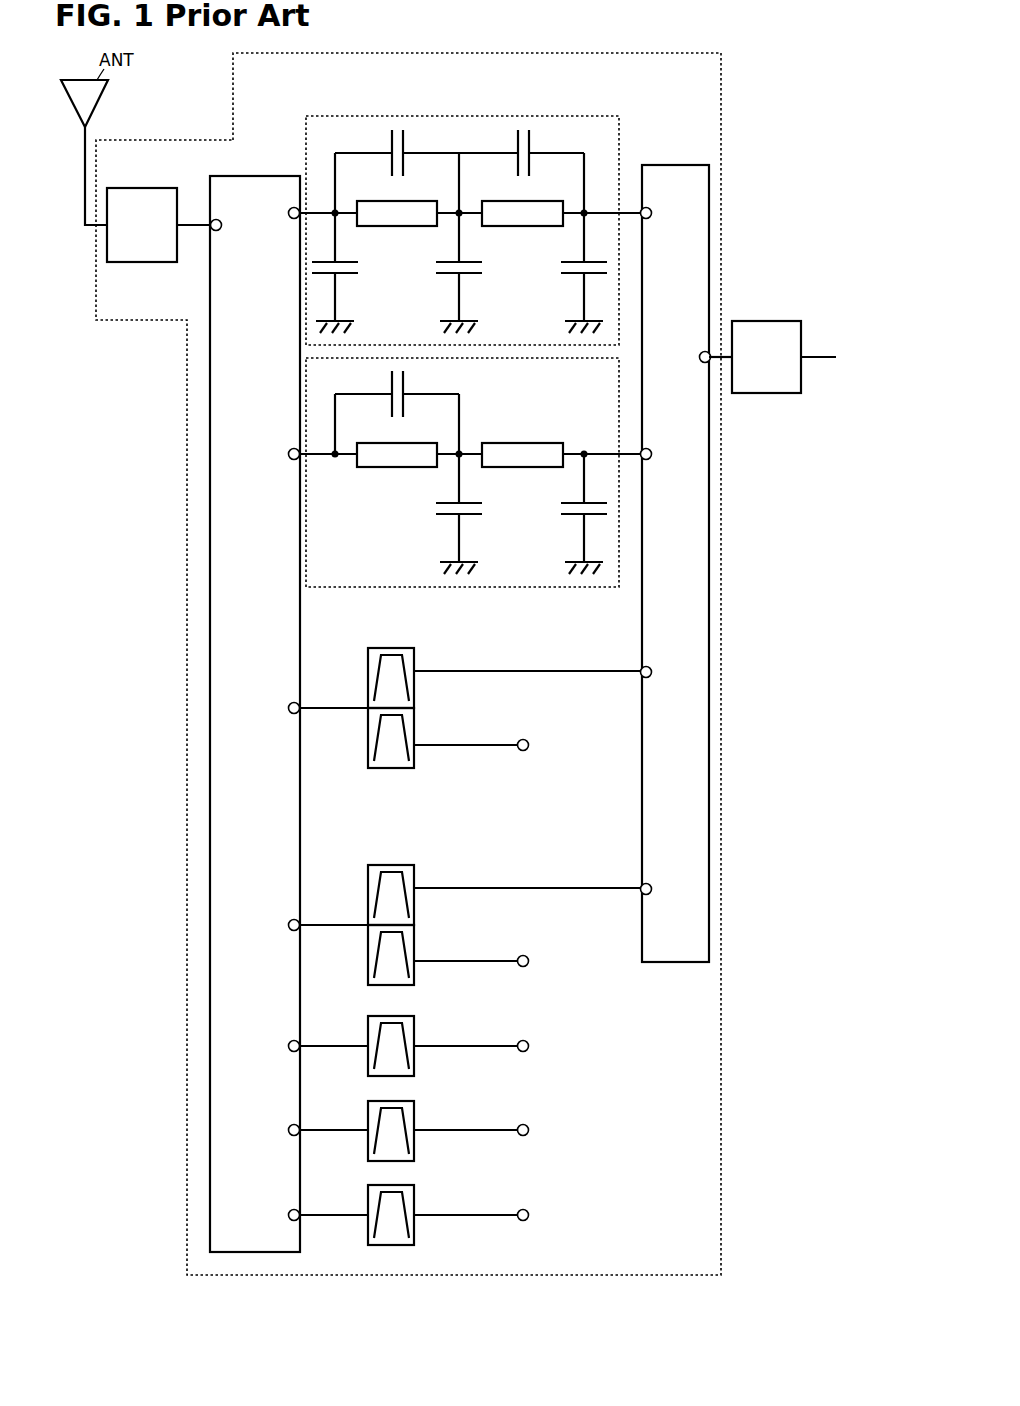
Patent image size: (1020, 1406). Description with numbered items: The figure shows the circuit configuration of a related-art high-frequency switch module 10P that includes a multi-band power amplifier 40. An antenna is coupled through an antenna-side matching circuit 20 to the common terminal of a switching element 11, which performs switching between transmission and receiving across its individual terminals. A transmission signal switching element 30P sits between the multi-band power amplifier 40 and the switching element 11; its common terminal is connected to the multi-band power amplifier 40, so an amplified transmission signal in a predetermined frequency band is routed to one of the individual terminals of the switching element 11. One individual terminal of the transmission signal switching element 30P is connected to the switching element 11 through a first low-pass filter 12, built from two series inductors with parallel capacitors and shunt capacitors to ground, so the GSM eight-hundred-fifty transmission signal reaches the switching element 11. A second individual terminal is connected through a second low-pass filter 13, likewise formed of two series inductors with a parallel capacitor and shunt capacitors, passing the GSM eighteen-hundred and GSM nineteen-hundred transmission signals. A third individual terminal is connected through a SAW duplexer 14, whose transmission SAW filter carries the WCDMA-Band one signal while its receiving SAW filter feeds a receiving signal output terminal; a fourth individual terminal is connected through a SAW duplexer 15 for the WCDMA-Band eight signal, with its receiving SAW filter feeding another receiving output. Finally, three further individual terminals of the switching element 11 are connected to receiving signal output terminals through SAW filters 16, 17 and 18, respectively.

The high-frequency switch module 10P is at (683, 53).
The switching element 11 is at (272, 176).
The first low-pass filter 12 is at (626, 196).
The second low-pass filter 13 is at (593, 420).
The SAW duplexer 14 is at (428, 658).
The SAW duplexer 15 is at (440, 870).
The SAW filter 16 is at (428, 1023).
The SAW filter 17 is at (428, 1108).
The SAW filter 18 is at (428, 1193).
The antenna-side matching circuit 20 is at (167, 182).
The transmission signal switching element 30P is at (674, 165).
The multi-band power amplifier 40 is at (771, 321).